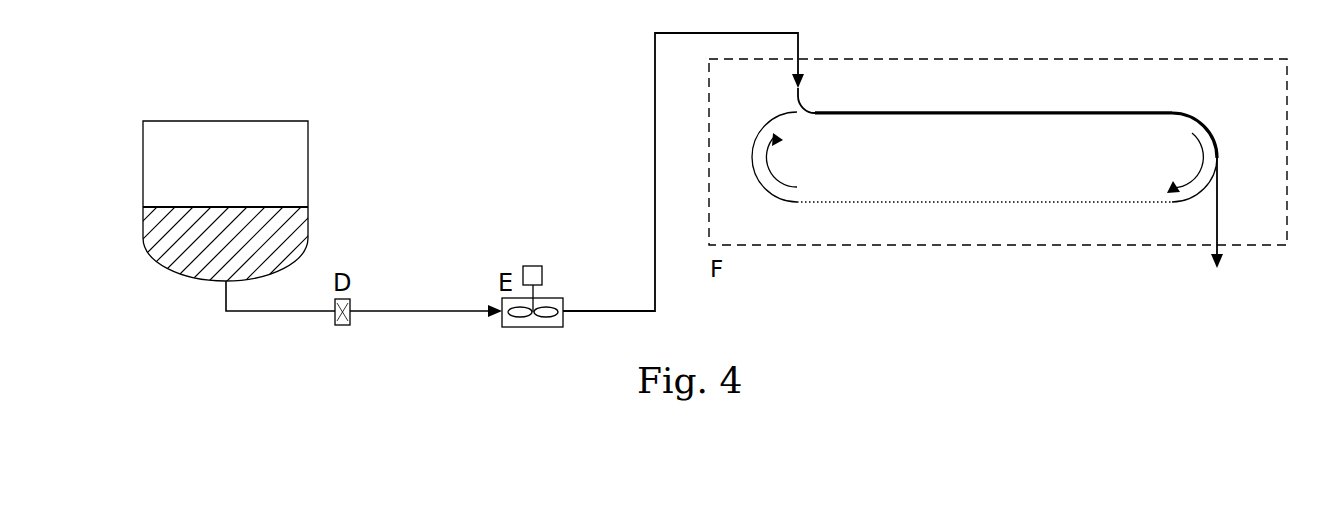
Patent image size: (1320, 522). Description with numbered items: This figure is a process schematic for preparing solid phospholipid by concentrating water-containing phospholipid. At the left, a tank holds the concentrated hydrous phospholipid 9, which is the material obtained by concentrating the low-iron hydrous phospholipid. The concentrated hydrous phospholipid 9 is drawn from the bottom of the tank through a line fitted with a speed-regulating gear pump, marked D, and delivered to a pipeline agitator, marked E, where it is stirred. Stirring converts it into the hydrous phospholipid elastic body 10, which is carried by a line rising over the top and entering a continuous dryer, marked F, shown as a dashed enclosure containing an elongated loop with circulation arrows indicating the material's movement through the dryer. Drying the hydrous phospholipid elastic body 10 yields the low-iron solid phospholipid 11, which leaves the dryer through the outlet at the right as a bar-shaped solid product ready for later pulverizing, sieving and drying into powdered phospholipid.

The concentrated hydrous phospholipid 9 is at (158, 233).
The hydrous phospholipid elastic body 10 is at (689, 172).
The low-iron solid phospholipid 11 is at (1226, 233).